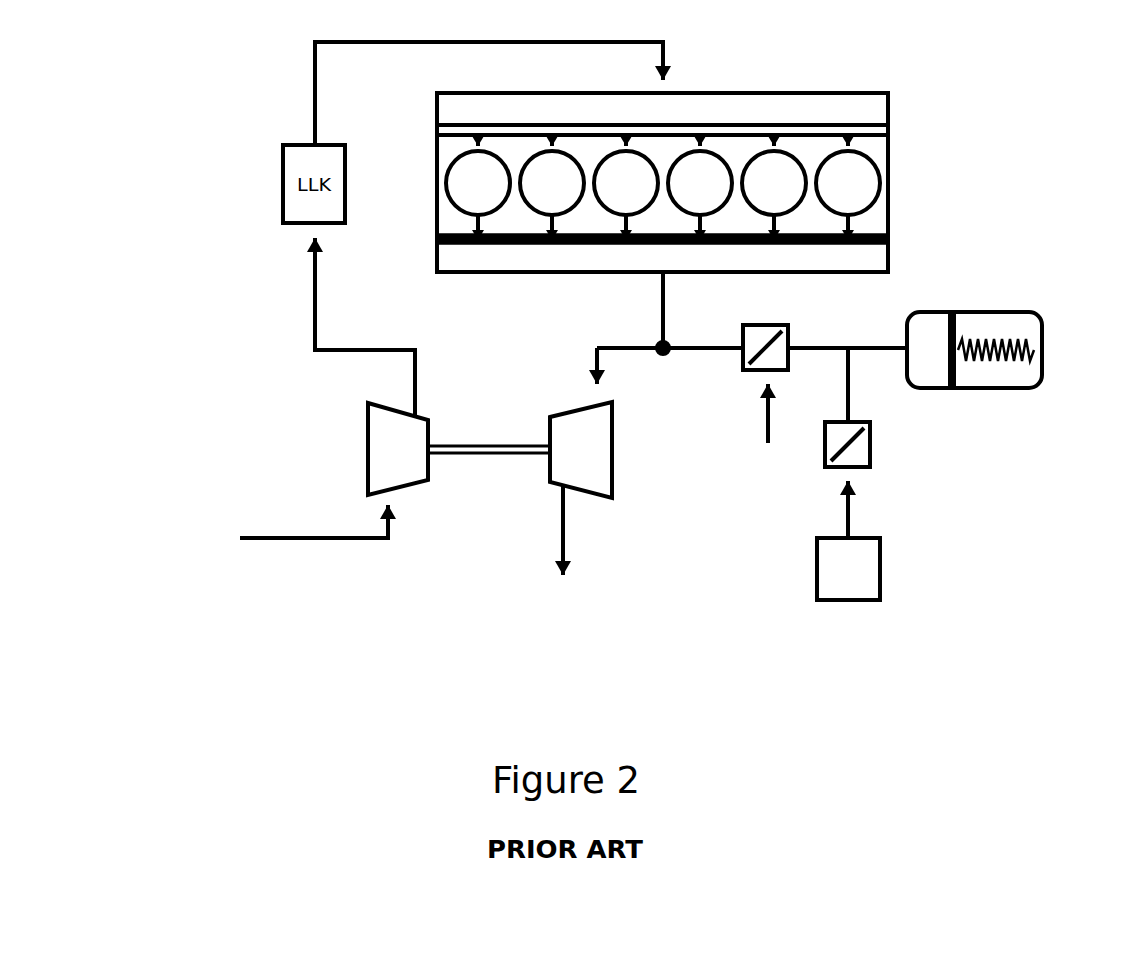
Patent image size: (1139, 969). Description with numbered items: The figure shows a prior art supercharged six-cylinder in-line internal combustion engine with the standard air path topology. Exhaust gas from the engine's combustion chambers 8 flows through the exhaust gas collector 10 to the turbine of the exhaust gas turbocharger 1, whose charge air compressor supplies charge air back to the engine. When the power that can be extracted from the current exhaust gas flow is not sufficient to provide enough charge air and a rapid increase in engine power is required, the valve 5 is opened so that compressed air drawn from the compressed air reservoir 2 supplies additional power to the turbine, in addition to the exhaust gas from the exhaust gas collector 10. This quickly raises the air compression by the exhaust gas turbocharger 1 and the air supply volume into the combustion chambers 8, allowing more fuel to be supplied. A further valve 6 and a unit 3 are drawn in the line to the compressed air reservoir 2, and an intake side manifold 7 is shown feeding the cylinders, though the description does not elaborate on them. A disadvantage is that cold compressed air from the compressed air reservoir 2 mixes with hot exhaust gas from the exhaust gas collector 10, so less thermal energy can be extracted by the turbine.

The exhaust gas turbocharger 1 is at (330, 450).
The compressed air reservoir 2 is at (1030, 310).
The compressed air source / compressor unit 3 is at (892, 614).
The valve 5 is at (745, 322).
The valve 6 is at (880, 448).
The intake manifold 7 is at (645, 119).
The combustion chambers 8 is at (850, 184).
The exhaust gas collector 10 is at (647, 263).